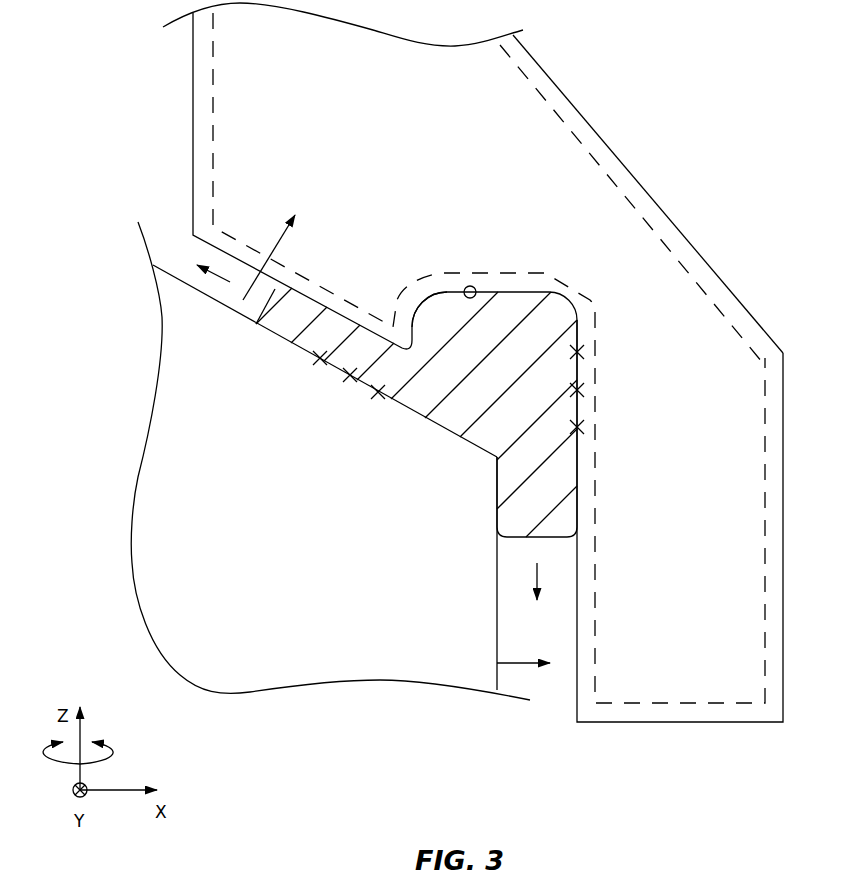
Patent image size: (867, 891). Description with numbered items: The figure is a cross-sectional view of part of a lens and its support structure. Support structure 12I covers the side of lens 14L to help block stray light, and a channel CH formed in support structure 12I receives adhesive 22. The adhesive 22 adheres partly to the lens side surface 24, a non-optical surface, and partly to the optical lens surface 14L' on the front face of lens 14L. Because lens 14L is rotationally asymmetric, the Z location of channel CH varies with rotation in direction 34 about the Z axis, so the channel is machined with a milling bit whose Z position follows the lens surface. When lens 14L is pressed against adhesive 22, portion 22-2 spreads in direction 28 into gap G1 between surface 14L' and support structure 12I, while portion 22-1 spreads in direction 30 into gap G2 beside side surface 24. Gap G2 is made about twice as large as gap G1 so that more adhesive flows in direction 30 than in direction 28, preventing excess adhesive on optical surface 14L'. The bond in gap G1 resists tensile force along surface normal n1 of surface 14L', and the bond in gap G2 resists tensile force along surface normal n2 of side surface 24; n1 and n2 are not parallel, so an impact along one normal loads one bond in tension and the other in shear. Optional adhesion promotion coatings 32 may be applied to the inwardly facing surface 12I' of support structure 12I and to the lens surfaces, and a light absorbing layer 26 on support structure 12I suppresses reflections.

The support structure 12I is at (473, 182).
The inwardly facing surface 12I' is at (470, 264).
The channel CH is at (506, 320).
The light absorbing layer 26 is at (765, 620).
The lens 14L is at (330, 488).
The optical lens surface 14L' is at (313, 320).
The lens side surface 24 is at (497, 674).
The adhesive 22 is at (424, 397).
The portion of adhesive 22-1 is at (508, 485).
The portion of adhesive 22-2 is at (283, 327).
The coatings 32 is at (352, 382).
The direction 28 is at (220, 284).
The direction 30 is at (535, 573).
The gap G1 is at (183, 241).
The gap G2 is at (557, 676).
The surface normal n1 is at (277, 257).
The surface normal n2 is at (523, 651).
The direction of rotation 34 is at (123, 752).